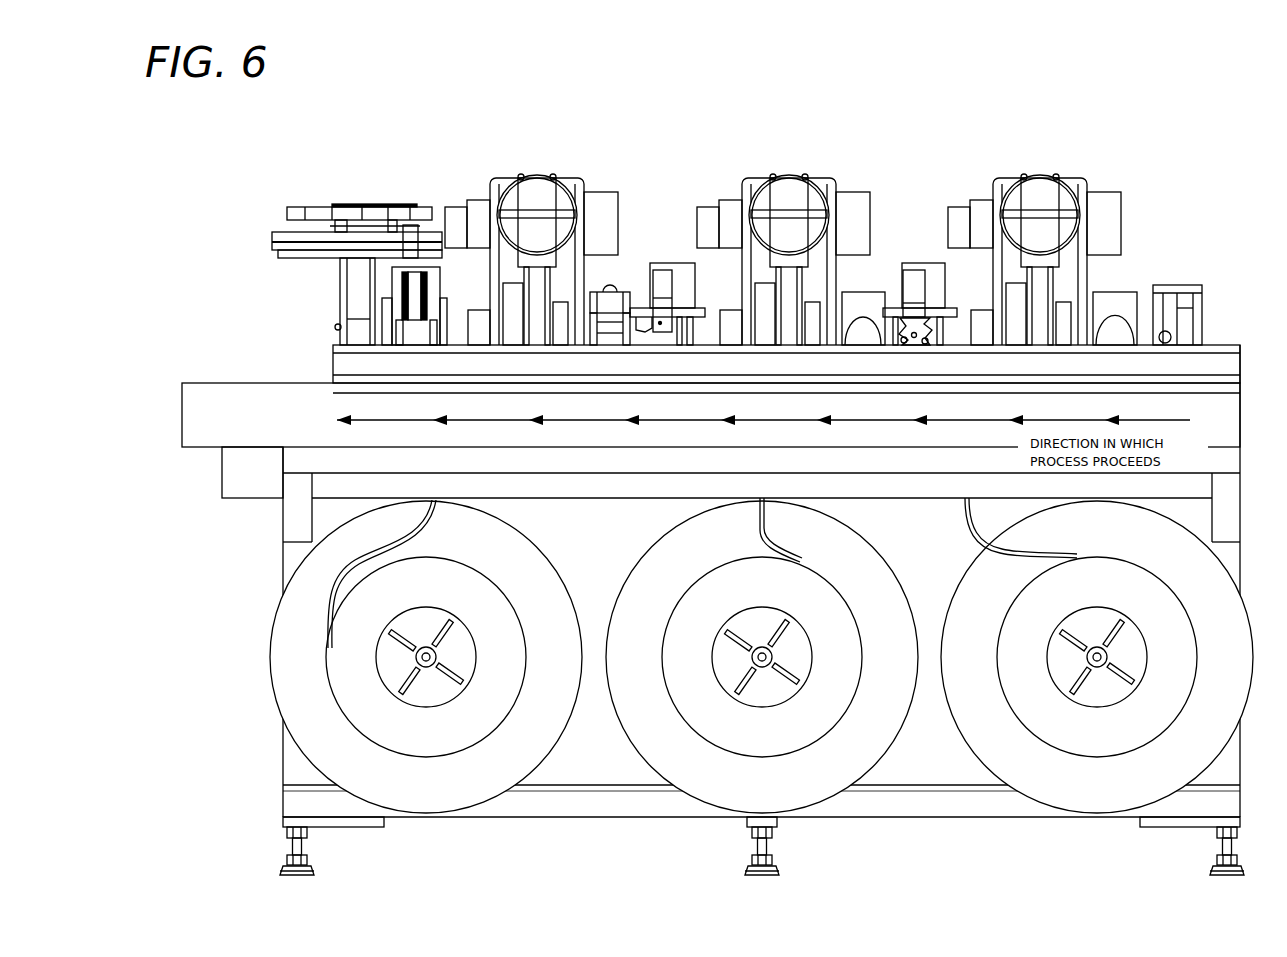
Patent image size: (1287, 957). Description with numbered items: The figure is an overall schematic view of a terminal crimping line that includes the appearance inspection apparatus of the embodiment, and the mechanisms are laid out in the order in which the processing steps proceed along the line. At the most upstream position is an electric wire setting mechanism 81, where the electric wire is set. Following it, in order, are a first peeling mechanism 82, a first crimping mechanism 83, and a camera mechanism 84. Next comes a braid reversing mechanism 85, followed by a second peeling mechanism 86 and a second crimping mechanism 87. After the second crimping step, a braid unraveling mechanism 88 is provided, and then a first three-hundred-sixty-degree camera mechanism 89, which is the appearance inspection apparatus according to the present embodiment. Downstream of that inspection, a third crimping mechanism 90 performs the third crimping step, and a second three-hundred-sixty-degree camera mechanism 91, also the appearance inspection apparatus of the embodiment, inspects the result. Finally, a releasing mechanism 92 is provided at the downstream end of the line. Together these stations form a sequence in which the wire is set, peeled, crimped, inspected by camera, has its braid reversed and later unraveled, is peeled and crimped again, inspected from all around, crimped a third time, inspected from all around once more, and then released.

The electric wire setting mechanism 81 is at (1182, 285).
The first peeling mechanism 82 is at (1127, 290).
The first crimping mechanism 83 is at (1040, 178).
The camera mechanism 84 is at (923, 266).
The braid reversing mechanism 85 is at (902, 263).
The second peeling mechanism 86 is at (875, 290).
The second crimping mechanism 87 is at (789, 178).
The braid unraveling mechanism 88 is at (675, 263).
The first camera 360° mechanism 89 is at (623, 288).
The third crimping mechanism 90 is at (537, 178).
The second camera 360° mechanism 91 is at (398, 204).
The releasing mechanism 92 is at (318, 242).